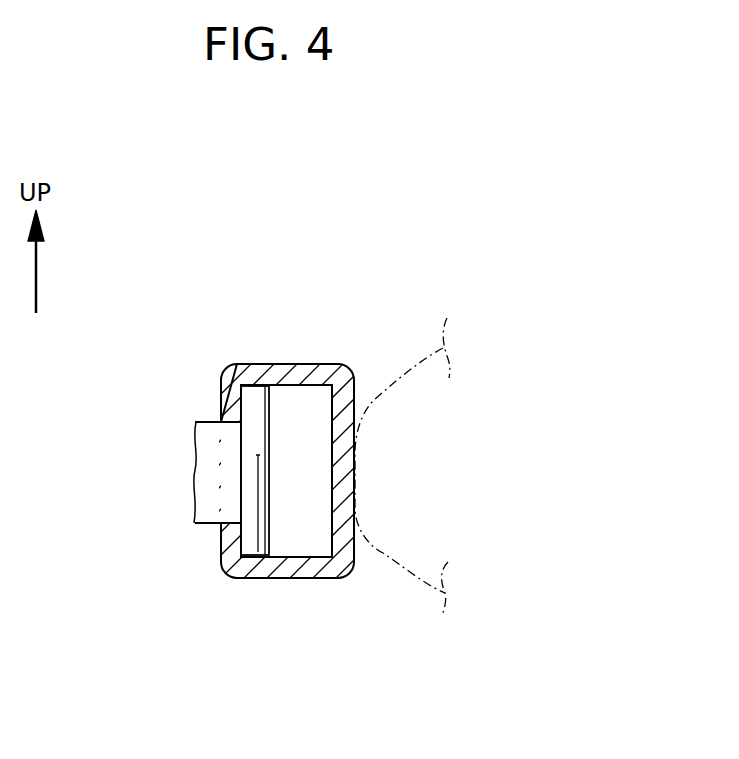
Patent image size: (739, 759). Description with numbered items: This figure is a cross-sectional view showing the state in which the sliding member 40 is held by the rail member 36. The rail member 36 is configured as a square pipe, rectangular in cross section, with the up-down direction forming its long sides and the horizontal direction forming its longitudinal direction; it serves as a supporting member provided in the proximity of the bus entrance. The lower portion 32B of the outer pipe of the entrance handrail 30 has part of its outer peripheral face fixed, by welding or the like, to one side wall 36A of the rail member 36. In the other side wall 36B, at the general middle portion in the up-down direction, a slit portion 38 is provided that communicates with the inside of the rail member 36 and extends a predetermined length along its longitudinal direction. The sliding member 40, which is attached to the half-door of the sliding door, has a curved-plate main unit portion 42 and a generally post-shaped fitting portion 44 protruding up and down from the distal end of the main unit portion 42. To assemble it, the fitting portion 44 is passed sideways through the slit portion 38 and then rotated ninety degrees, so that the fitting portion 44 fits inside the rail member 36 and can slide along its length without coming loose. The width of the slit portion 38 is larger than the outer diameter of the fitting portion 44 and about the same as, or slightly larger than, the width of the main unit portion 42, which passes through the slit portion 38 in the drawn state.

The entrance handrail 30 is at (378, 354).
The lower portion of outer pipe 32B is at (420, 352).
The rail member 36 is at (257, 362).
The one side wall of rail member 36A is at (352, 550).
The other side wall of rail member 36B is at (213, 560).
The slit portion 38 is at (218, 526).
The sliding member 40 is at (205, 417).
The main unit portion 42 is at (210, 480).
The fitting portion 44 is at (265, 475).